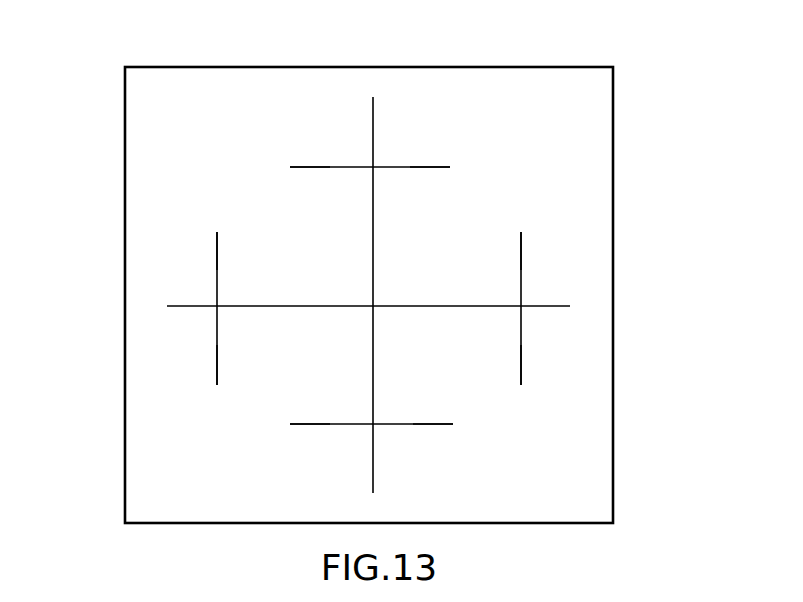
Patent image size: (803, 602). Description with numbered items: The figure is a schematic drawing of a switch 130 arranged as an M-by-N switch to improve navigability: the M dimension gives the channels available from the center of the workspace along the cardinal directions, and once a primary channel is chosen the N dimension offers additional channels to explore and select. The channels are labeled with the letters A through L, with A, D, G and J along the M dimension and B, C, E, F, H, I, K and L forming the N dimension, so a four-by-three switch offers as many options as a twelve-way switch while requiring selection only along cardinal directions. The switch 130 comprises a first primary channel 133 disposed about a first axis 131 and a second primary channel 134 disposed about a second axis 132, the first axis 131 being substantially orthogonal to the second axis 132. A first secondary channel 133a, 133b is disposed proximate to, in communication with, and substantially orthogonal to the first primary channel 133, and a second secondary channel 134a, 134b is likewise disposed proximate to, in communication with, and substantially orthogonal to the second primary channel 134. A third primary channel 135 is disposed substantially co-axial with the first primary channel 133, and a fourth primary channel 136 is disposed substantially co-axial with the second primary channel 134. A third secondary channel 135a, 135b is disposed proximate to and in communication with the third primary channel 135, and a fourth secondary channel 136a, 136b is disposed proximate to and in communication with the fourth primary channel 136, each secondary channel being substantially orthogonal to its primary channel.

The switch 130 is at (650, 125).
The first axis 131 is at (373, 240).
The second axis 132 is at (440, 307).
The first primary channel 133 is at (373, 120).
The first secondary channel 133a is at (325, 167).
The first secondary channel 133b is at (430, 167).
The second primary channel 134 is at (548, 305).
The second secondary channel 134a is at (521, 260).
The second secondary channel 134b is at (521, 352).
The third primary channel 135 is at (373, 470).
The third secondary channel 135a is at (325, 424).
The third secondary channel 135b is at (412, 424).
The fourth primary channel 136 is at (187, 303).
The fourth secondary channel 136a is at (217, 260).
The fourth secondary channel 136b is at (217, 352).